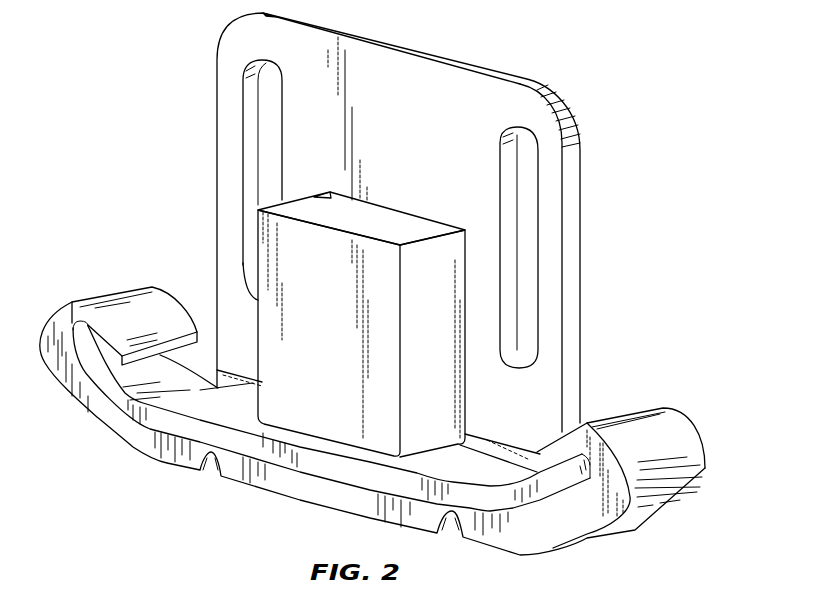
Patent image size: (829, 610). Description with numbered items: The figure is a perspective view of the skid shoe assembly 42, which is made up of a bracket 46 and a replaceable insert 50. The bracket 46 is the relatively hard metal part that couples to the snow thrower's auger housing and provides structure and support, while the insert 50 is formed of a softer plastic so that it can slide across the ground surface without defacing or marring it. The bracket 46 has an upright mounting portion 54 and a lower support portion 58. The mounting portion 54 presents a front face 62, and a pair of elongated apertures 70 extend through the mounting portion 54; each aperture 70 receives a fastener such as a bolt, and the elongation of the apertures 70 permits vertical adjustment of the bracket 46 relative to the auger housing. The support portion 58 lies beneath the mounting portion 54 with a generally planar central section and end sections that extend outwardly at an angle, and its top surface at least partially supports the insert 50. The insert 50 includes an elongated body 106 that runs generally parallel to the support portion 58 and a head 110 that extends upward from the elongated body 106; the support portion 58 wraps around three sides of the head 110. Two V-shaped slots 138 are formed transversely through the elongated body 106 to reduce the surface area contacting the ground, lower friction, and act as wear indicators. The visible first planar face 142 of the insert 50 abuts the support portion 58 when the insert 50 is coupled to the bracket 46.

The skid shoe assembly 42 is at (126, 93).
The bracket 46 is at (467, 67).
The replaceable insert 50 is at (680, 423).
The mounting portion 54 is at (347, 25).
The support portion 58 is at (134, 429).
The front face 62 is at (392, 90).
The elongated apertures 70 is at (250, 133).
The elongated body 106 is at (238, 474).
The head 110 is at (397, 217).
The V-shaped slots 138 is at (208, 473).
The first planar face 142 is at (340, 317).